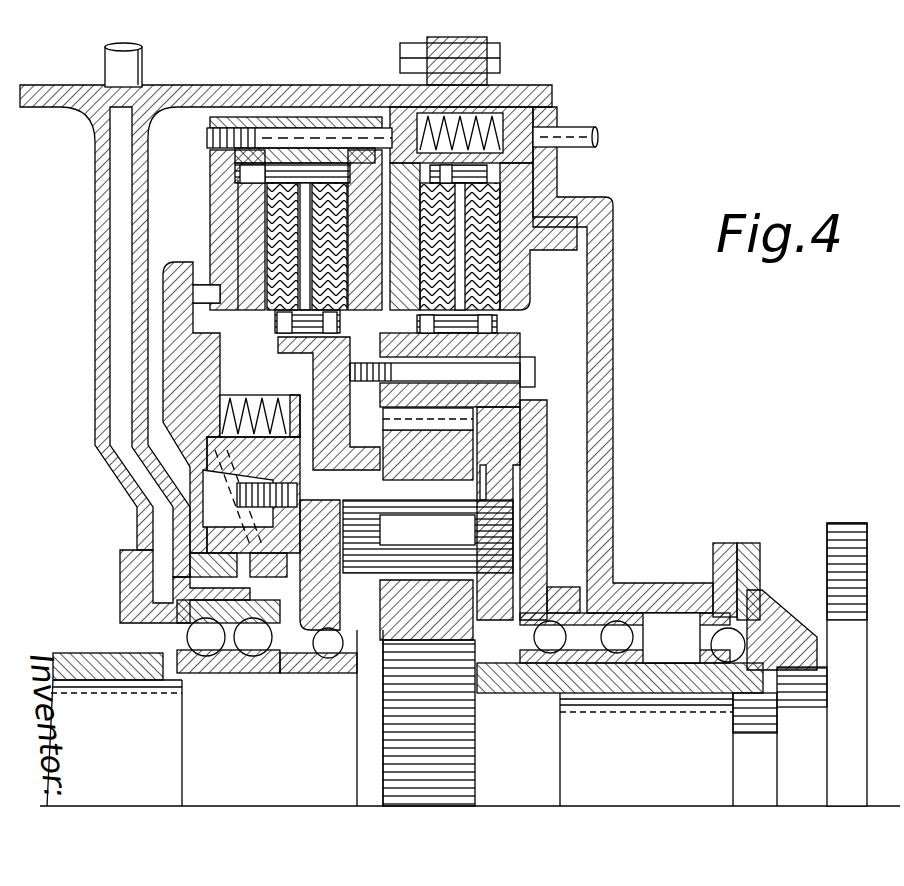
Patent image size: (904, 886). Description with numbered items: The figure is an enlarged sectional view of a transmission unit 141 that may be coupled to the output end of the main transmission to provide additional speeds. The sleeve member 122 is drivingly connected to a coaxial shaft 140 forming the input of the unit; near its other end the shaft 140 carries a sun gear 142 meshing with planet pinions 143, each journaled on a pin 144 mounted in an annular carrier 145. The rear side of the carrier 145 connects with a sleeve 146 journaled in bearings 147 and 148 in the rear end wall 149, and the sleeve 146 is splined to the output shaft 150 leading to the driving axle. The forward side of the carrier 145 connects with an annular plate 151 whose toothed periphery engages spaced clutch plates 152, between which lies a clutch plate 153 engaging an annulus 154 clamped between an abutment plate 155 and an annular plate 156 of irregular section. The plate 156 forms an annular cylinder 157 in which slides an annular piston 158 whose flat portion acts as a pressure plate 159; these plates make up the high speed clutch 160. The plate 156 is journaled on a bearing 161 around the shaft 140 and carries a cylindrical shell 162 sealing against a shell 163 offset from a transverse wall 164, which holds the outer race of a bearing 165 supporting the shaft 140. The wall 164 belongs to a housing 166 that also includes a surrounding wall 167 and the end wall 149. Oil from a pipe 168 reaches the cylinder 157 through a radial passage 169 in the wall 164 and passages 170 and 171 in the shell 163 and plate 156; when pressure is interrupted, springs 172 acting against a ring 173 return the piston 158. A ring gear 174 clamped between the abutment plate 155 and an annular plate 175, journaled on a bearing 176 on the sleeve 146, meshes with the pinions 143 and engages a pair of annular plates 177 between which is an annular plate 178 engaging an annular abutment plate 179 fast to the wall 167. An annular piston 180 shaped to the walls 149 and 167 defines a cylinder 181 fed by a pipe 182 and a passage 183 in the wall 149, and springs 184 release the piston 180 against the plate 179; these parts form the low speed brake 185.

The sleeve member 122 is at (110, 648).
The shaft 140 is at (140, 728).
The transmission unit 141 is at (90, 266).
The sun gear 142 is at (445, 728).
The planet pinions 143 is at (440, 622).
The pin 144 is at (445, 541).
The annular carrier 145 is at (512, 482).
The sleeve 146 is at (622, 691).
The bearing 147 is at (617, 635).
The bearing 148 is at (740, 640).
The rear end wall 149 is at (614, 392).
The output shaft 150 is at (718, 738).
The annular plate 151 is at (360, 452).
The clutch plates 152 is at (276, 318).
The clutch plate 153 is at (292, 173).
The annulus 154 is at (322, 122).
The annular plate 155 is at (372, 275).
The annular plate 156 is at (212, 206).
The annular cylinder 157 is at (217, 290).
The annular piston 158 is at (216, 295).
The pressure plate 159 is at (245, 193).
The clutch 160 is at (206, 157).
The bearing 161 is at (328, 660).
The cylindrical shell 162 is at (232, 531).
The shell 163 is at (318, 562).
The transverse wall 164 is at (96, 414).
The bearing 165 is at (212, 652).
The housing 166 is at (215, 80).
The surrounding wall 167 is at (270, 85).
The pipe 168 is at (106, 64).
The radial passage 169 is at (97, 316).
The passage 170 is at (195, 585).
The passage 171 is at (200, 503).
The springs 172 is at (266, 395).
The ring 173 is at (300, 395).
The ring gear 174 is at (455, 401).
The annular plate 175 is at (549, 520).
The bearing 176 is at (552, 622).
The annular plates 177 is at (500, 327).
The annular plate 178 is at (555, 163).
The annular abutment plate 179 is at (407, 236).
The annular piston 180 is at (524, 237).
The annular cylinder 181 is at (577, 187).
The pipe 182 is at (596, 130).
The passage 183 is at (556, 108).
The springs 184 is at (492, 107).
The low speed brake 185 is at (530, 262).